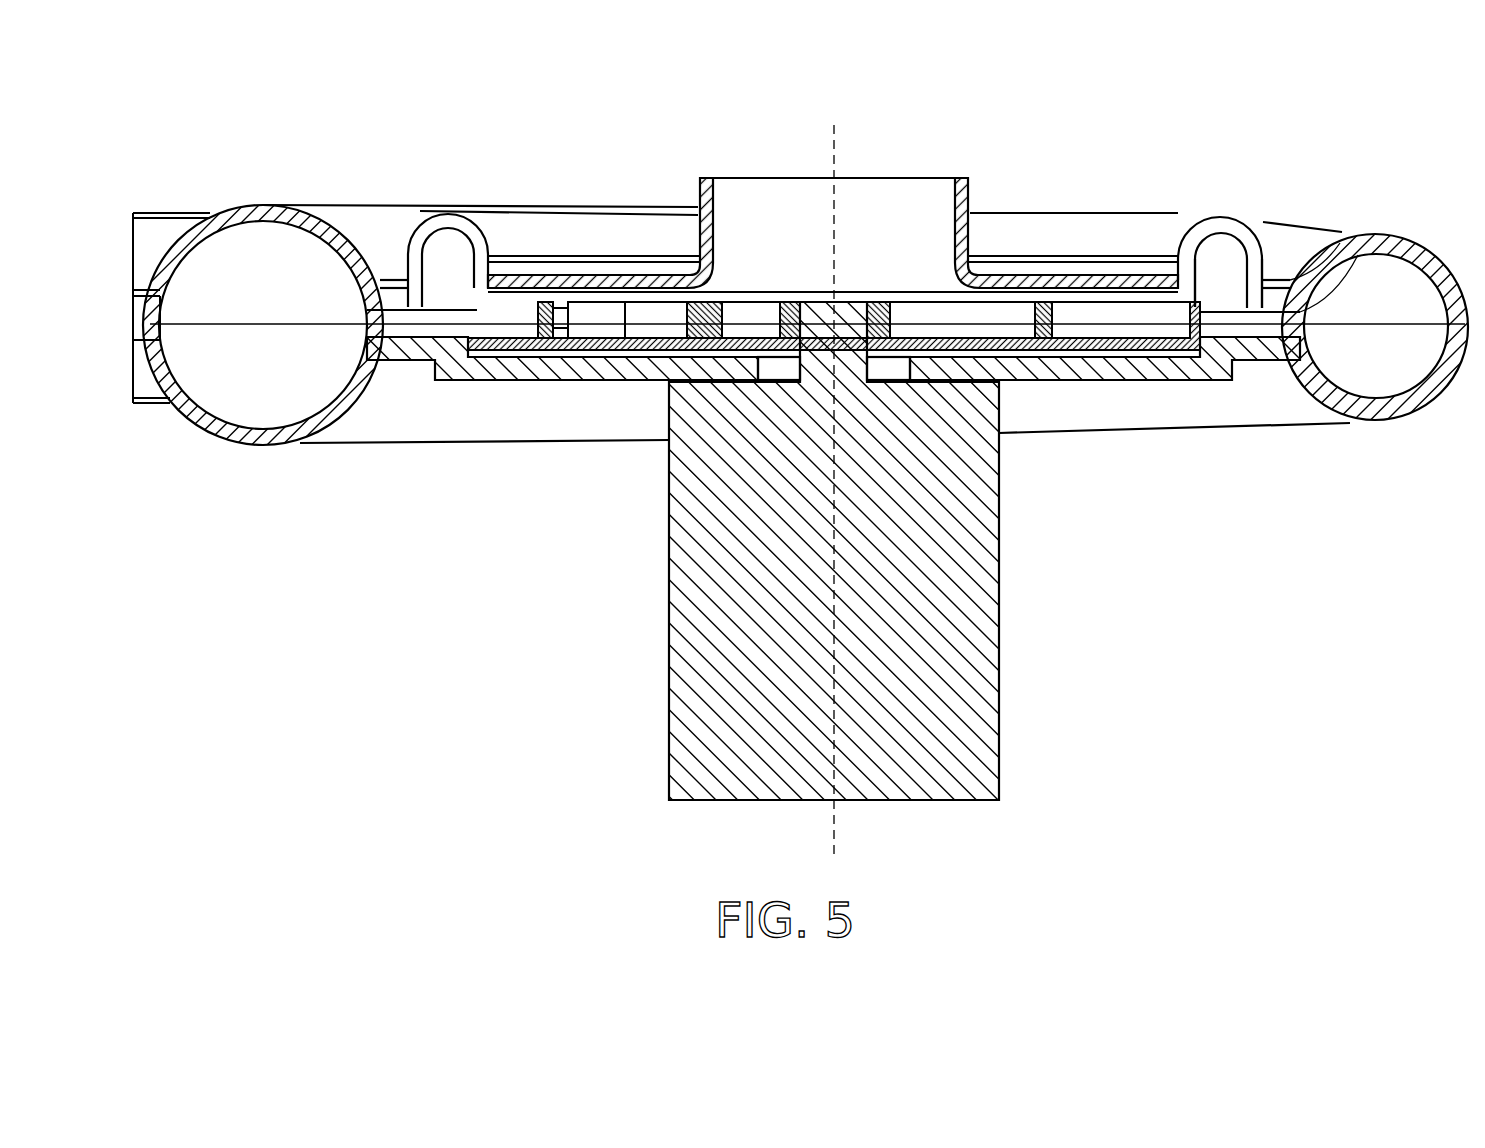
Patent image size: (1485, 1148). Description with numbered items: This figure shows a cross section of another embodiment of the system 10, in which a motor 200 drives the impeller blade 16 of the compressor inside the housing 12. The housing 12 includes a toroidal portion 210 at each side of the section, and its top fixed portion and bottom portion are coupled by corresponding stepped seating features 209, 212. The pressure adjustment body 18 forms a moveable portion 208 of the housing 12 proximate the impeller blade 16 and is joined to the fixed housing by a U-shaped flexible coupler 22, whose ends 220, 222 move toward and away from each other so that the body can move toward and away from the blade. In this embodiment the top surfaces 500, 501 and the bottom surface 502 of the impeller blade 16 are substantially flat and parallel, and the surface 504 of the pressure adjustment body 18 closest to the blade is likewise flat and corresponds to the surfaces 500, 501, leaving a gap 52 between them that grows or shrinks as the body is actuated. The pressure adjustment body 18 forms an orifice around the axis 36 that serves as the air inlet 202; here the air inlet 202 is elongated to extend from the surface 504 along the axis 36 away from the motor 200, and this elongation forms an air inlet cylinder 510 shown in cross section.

The system 10 is at (183, 148).
The housing 12 is at (1300, 224).
The impeller blade 16 is at (1152, 350).
The pressure adjustment body 18 is at (833, 182).
The moveable portion 208 is at (610, 273).
The flexible coupler 22 is at (1226, 212).
The axis 36 is at (826, 812).
The gap 52 is at (1010, 282).
The motor 200 is at (668, 705).
The air inlet 202 is at (942, 130).
The seating feature 209 is at (157, 290).
The toroidal portion 210 is at (232, 355).
The seating feature 212 is at (148, 337).
The end of flexible coupler 220 is at (410, 304).
The end of flexible coupler 222 is at (483, 300).
The top surface of impeller blade 500 is at (545, 310).
The top surface of impeller blade 501 is at (503, 310).
The bottom surface of impeller blade 502 is at (597, 353).
The surface of pressure adjustment body 504 is at (644, 340).
The air inlet cylinder 510 is at (930, 183).